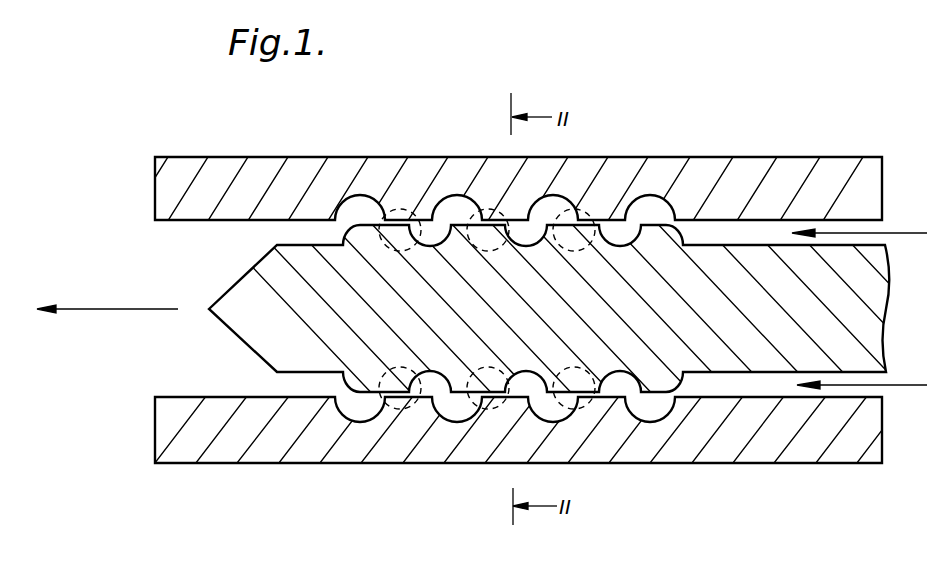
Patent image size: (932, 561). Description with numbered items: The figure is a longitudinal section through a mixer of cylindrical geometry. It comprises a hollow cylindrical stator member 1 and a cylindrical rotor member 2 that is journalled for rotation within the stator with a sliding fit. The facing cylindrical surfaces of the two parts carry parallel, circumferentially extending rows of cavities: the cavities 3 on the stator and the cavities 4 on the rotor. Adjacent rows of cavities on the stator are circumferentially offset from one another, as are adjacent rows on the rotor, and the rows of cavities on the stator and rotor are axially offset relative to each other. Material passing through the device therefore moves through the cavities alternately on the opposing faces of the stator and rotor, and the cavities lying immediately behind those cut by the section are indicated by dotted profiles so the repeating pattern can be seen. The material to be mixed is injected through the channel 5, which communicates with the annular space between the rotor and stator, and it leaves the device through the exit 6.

The stator member 1 is at (702, 175).
The rotor member 2 is at (790, 337).
The cavities on the stator 3 is at (455, 412).
The cavities on the rotor 4 is at (430, 240).
The channel 5 is at (725, 232).
The exit 6 is at (215, 382).